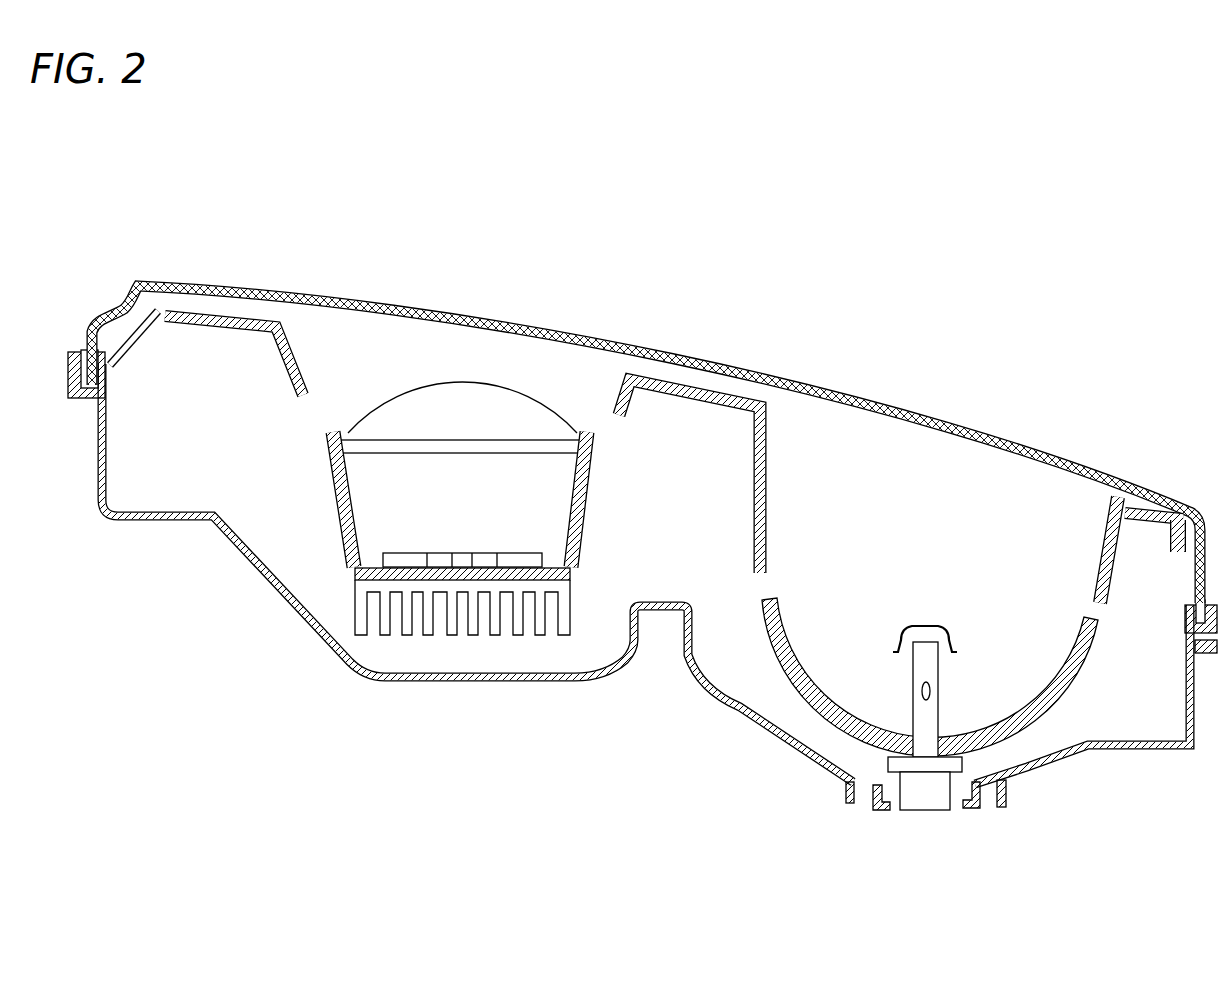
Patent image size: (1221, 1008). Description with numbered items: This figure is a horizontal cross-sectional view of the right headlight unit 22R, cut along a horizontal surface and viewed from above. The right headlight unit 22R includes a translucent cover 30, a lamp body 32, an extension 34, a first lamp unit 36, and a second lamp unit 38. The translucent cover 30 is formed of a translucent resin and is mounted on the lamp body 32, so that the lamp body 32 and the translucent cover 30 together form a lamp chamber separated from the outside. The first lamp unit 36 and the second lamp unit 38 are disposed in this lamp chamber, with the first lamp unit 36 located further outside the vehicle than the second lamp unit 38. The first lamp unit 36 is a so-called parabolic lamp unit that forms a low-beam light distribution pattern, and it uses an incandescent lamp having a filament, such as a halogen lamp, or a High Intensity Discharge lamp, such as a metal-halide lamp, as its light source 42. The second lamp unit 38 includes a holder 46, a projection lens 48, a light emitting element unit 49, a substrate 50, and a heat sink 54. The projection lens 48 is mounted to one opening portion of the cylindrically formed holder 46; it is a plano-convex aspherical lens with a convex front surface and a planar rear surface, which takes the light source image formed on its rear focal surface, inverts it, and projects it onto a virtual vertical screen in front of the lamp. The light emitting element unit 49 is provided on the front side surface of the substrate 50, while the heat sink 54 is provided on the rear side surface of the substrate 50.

The right headlight unit 22R is at (642, 519).
The translucent cover 30 is at (1088, 462).
The lamp body 32 is at (1130, 750).
The extension 34 is at (1150, 497).
The first lamp unit 36 is at (810, 708).
The second lamp unit 38 is at (415, 494).
The light source 42 is at (940, 680).
The holder 46 is at (350, 548).
The projection lens 48 is at (500, 403).
The light emitting element unit 49 is at (452, 517).
The substrate 50 is at (535, 577).
The heat sink 54 is at (390, 585).